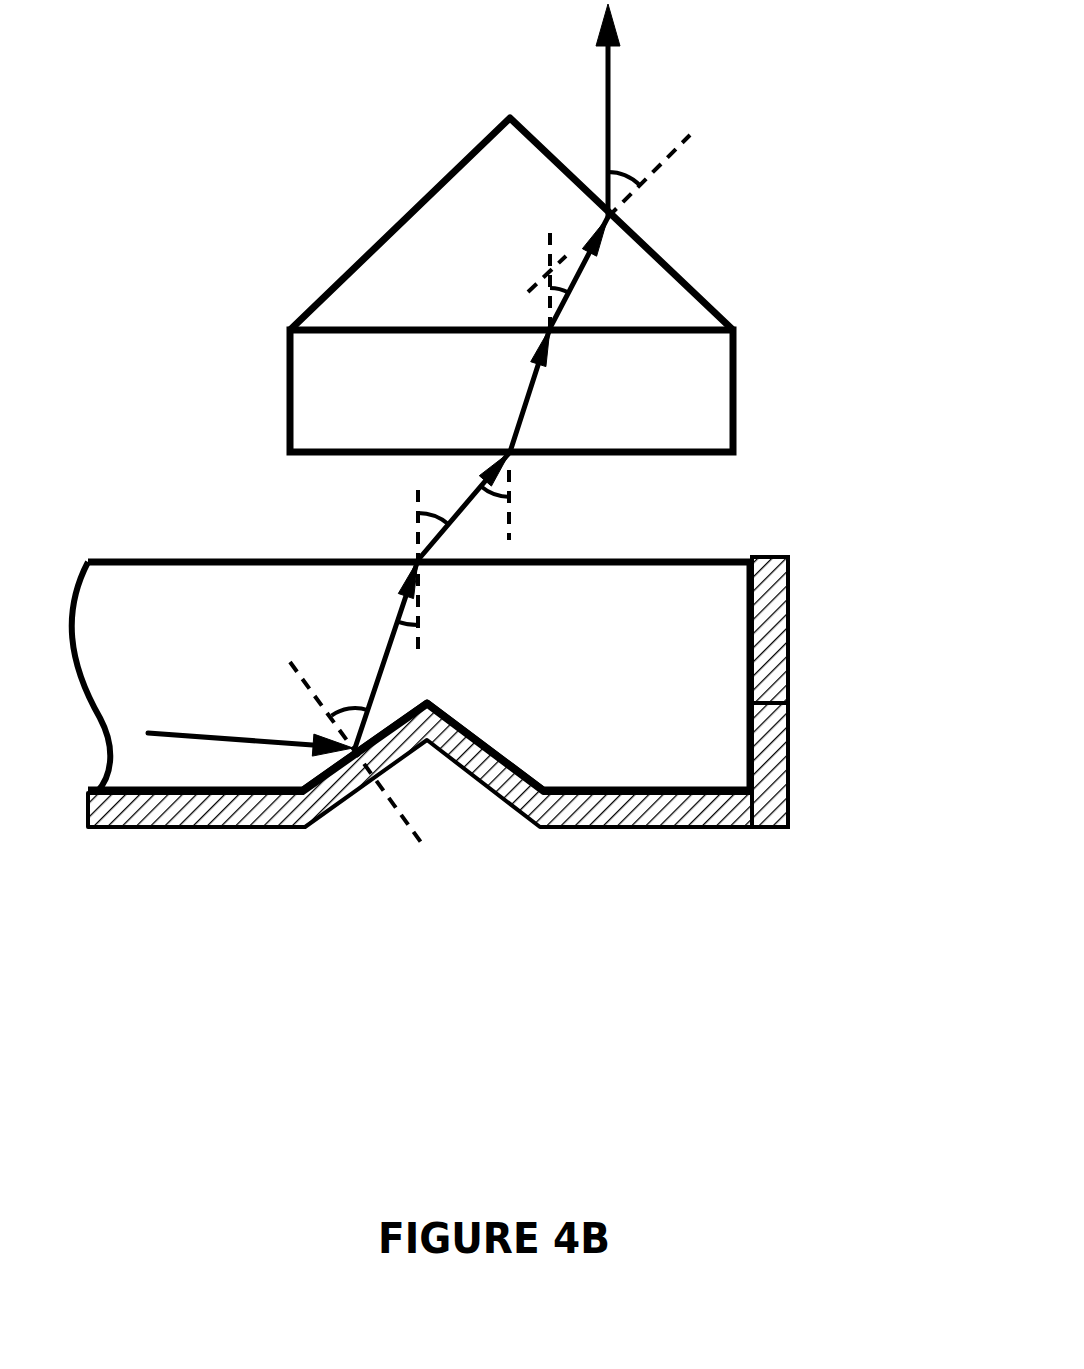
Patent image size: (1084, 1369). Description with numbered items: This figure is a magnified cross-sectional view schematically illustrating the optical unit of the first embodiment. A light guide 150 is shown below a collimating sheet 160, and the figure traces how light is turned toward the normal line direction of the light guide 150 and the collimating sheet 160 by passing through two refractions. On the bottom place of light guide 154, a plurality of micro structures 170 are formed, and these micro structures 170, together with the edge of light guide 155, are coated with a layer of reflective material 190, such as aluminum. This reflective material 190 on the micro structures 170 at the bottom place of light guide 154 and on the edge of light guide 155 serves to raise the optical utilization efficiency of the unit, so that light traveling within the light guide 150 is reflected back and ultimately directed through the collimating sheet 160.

The light guide 150 is at (152, 531).
The bottom place of light guide 154 is at (175, 793).
The edge of light guide 155 is at (757, 705).
The collimating sheet 160 is at (328, 187).
The micro structures 170 is at (430, 744).
The reflective material 190 is at (766, 603).